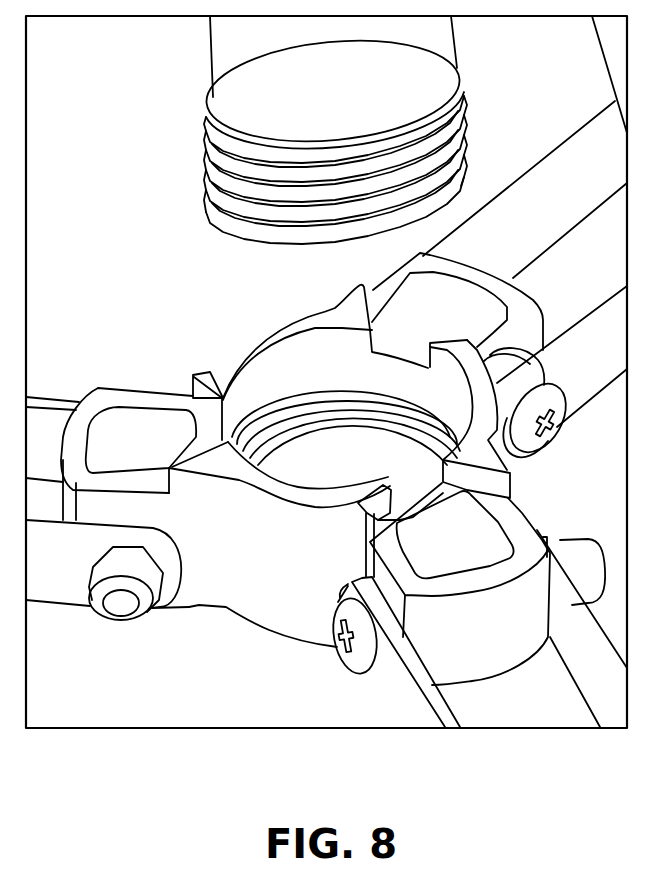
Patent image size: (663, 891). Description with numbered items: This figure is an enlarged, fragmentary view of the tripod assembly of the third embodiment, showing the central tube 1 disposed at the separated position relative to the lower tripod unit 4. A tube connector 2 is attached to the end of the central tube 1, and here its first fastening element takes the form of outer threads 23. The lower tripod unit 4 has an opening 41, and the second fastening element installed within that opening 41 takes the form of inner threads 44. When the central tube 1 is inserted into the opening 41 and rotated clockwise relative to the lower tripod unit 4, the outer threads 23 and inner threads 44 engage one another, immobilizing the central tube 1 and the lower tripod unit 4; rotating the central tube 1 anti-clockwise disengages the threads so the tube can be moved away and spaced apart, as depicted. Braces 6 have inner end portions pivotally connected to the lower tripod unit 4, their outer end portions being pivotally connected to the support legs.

The central tube 1 is at (433, 39).
The tube connector 2 is at (178, 164).
The outer threads 23 is at (447, 120).
The lower tripod unit 4 is at (238, 620).
The opening 41 is at (353, 468).
The inner threads 44 is at (283, 400).
The brace 6 is at (393, 693).